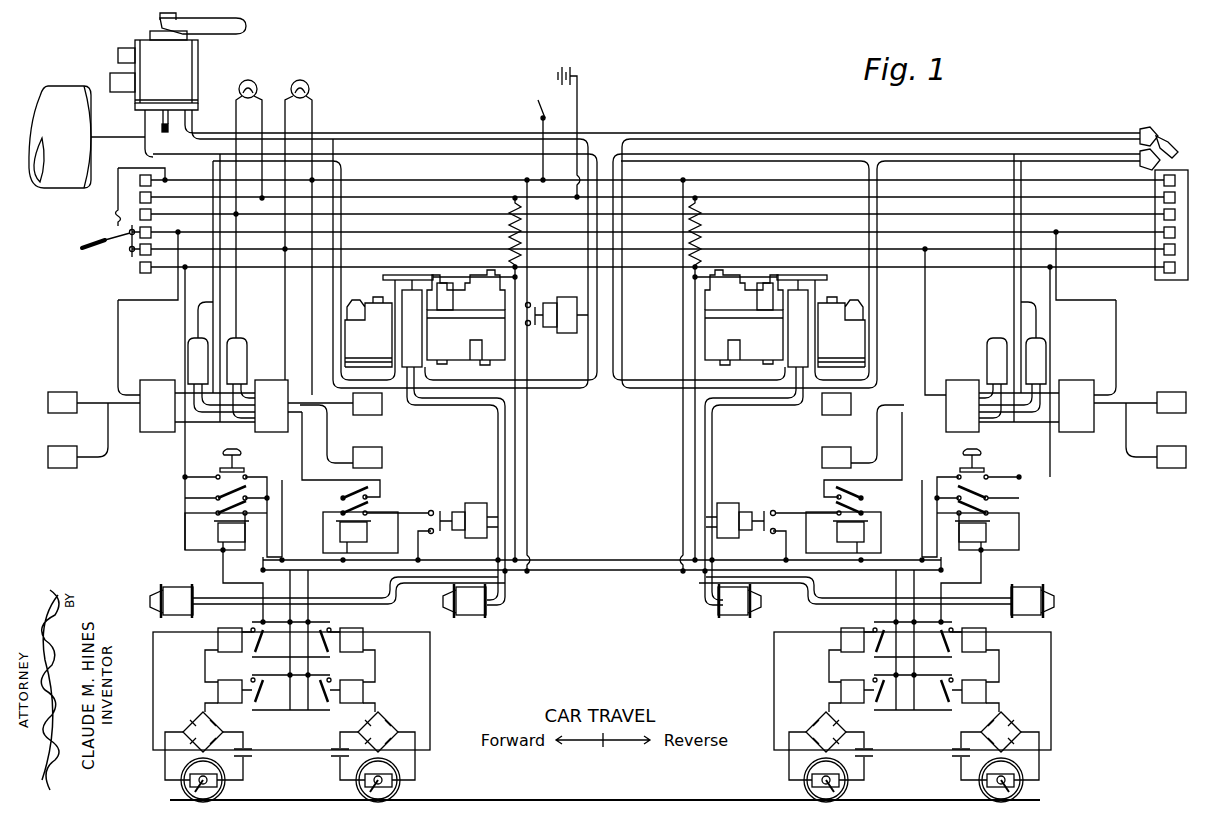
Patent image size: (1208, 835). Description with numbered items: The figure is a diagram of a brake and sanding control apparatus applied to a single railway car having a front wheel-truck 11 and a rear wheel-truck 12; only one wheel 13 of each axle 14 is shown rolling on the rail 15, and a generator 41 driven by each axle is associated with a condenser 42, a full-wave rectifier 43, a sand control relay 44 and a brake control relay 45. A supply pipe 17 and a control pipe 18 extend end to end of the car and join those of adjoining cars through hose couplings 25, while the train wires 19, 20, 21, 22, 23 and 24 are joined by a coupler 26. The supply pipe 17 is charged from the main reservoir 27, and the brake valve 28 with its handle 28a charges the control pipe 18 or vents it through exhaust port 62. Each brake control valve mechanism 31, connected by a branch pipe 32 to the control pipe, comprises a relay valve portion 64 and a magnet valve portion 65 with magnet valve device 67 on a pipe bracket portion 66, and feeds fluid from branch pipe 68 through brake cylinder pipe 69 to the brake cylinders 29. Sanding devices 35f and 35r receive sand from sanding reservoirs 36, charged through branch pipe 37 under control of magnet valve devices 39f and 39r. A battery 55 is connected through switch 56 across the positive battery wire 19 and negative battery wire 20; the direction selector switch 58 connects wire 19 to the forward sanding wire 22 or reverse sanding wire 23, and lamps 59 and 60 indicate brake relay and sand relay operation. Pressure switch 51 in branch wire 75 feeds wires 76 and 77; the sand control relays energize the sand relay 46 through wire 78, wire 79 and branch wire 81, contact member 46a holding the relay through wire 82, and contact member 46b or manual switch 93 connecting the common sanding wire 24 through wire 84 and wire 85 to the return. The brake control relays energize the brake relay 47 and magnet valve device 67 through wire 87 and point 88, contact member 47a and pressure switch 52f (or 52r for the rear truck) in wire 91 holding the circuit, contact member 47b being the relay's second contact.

The front wheel-truck 11 is at (281, 769).
The rear wheel-truck 12 is at (894, 769).
The wheel 13 is at (226, 792).
The axle 14 is at (210, 781).
The rail 15 is at (588, 799).
The supply pipe 17 is at (442, 156).
The control pipe 18 is at (460, 131).
The positive battery wire 19 is at (430, 180).
The negative battery wire 20 is at (420, 197).
The indicating wire 21 is at (408, 215).
The forward sanding wire 22 is at (398, 233).
The reverse sanding wire 23 is at (392, 249).
The common sanding wire 24 is at (385, 267).
The hose coupling 25 is at (1158, 140).
The coupler 26 is at (1160, 283).
The main reservoir 27 is at (70, 92).
The brake valve 28 is at (130, 41).
The operating handle 28a is at (248, 28).
The brake cylinder 29 is at (182, 586).
The brake control valve mechanism 31 is at (376, 280).
The branch pipe 32 is at (573, 390).
The forward sanding device 35f is at (75, 415).
The reverse sanding device 35r is at (375, 416).
The sanding reservoir 36 is at (198, 337).
The branch pipe 37 is at (222, 283).
The forward sanding magnet valve device 39f is at (171, 378).
The reverse sanding magnet valve device 39r is at (280, 378).
The generator 41 is at (188, 795).
The condenser 42 is at (250, 750).
The full-wave rectifier 43 is at (200, 720).
The sand control relay 44 is at (211, 644).
The brake control relay 45 is at (216, 692).
The sand relay 46 is at (216, 534).
The contact member 46a is at (216, 510).
The contact member 46b is at (240, 488).
The brake relay 47 is at (368, 533).
The contact member 47a is at (342, 509).
The contact member 47b is at (358, 493).
The pressure switch device 51 is at (565, 297).
The pressure switch device 52f is at (478, 502).
The pressure switch device 52r is at (729, 502).
The storage battery 55 is at (560, 66).
The manually operated switch 56 is at (537, 106).
The direction selector switch 58 is at (92, 238).
The indicating lamp 59 is at (256, 82).
The indicating lamp 60 is at (309, 82).
The exhaust port 62 is at (167, 131).
The relay valve portion 64 is at (374, 365).
The magnet valve portion 65 is at (483, 360).
The pipe bracket portion 66 is at (424, 362).
The magnet valve device 67 is at (440, 288).
The branch pipe 68 is at (337, 308).
The brake cylinder pipe 69 is at (496, 432).
The branch wire 75 is at (531, 470).
The wire 76 is at (605, 573).
The wire 77 is at (330, 569).
The wire 78 is at (222, 576).
The wire 79 is at (618, 555).
The branch wire 81 is at (518, 435).
The wire 82 is at (184, 527).
The wire 84 is at (186, 328).
The wire 85 is at (286, 500).
The wire 87 is at (345, 579).
The point 88 is at (340, 556).
The wire 91 is at (425, 510).
The manually operated switch 93 is at (247, 459).